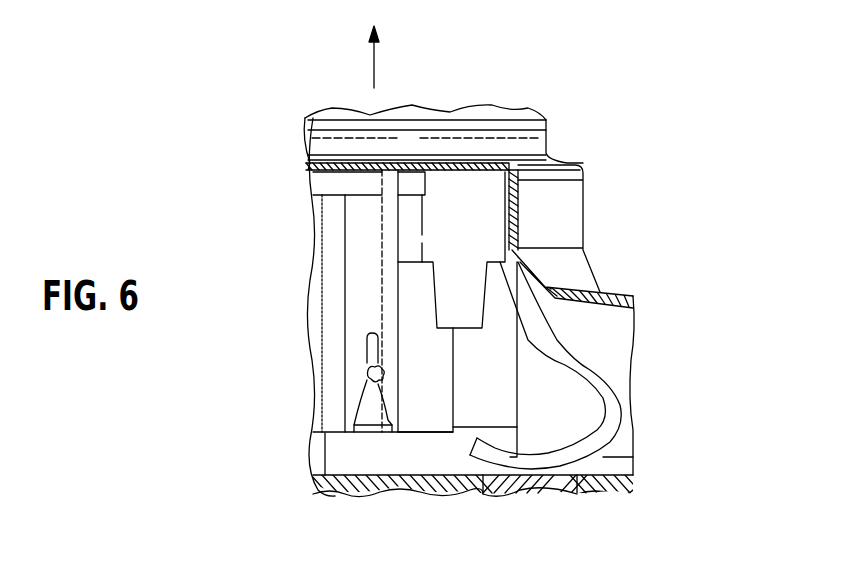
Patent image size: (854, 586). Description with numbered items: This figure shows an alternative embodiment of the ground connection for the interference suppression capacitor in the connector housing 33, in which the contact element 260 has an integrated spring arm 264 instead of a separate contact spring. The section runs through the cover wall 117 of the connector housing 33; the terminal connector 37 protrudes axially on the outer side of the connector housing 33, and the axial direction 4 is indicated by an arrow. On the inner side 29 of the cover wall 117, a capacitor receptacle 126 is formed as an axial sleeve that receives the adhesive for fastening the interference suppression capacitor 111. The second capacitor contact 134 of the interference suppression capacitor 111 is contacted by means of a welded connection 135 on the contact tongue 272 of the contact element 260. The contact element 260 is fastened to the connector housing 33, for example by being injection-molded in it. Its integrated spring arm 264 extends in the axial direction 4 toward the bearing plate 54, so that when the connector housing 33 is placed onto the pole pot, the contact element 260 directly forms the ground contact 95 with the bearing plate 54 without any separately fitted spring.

The axial direction 4 is at (372, 60).
The terminal connector 37 is at (405, 120).
The cover wall 117 is at (459, 165).
The inner side 29 is at (338, 182).
The capacitor receptacle 126 is at (363, 247).
The contact tongue 272 is at (392, 293).
The interference suppression capacitor 111 is at (373, 343).
The second capacitor contact 134 is at (372, 372).
The welded connection 135 is at (380, 420).
The contact element 260 is at (475, 218).
The connector housing 33 is at (607, 333).
The integrated spring arm 264 is at (623, 400).
The bearing plate 54 is at (397, 488).
The ground contact 95 is at (528, 488).